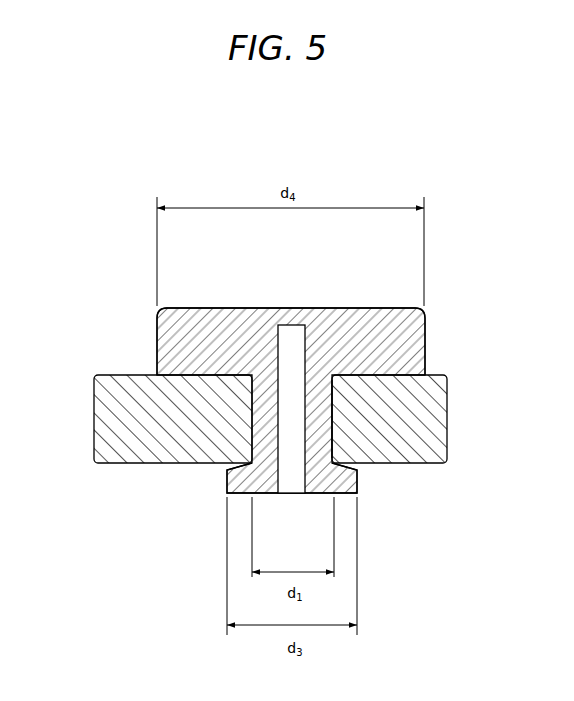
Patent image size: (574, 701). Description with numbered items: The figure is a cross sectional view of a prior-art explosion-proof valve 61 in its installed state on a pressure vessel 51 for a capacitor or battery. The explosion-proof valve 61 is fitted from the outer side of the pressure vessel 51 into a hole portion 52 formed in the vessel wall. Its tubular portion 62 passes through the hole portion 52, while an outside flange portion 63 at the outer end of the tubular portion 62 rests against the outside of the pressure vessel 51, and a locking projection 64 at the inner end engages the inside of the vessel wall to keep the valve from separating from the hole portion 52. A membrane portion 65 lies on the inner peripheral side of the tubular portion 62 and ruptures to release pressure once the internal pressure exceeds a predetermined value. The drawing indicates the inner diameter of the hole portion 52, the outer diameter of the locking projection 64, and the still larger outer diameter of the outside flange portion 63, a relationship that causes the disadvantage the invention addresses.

The pressure vessel 51 is at (432, 402).
The hole portion 52 is at (335, 431).
The explosion-proof valve 61 is at (427, 331).
The tubular portion 62 is at (252, 436).
The outside flange portion 63 is at (178, 346).
The locking projection 64 is at (227, 482).
The membrane portion 65 is at (287, 308).